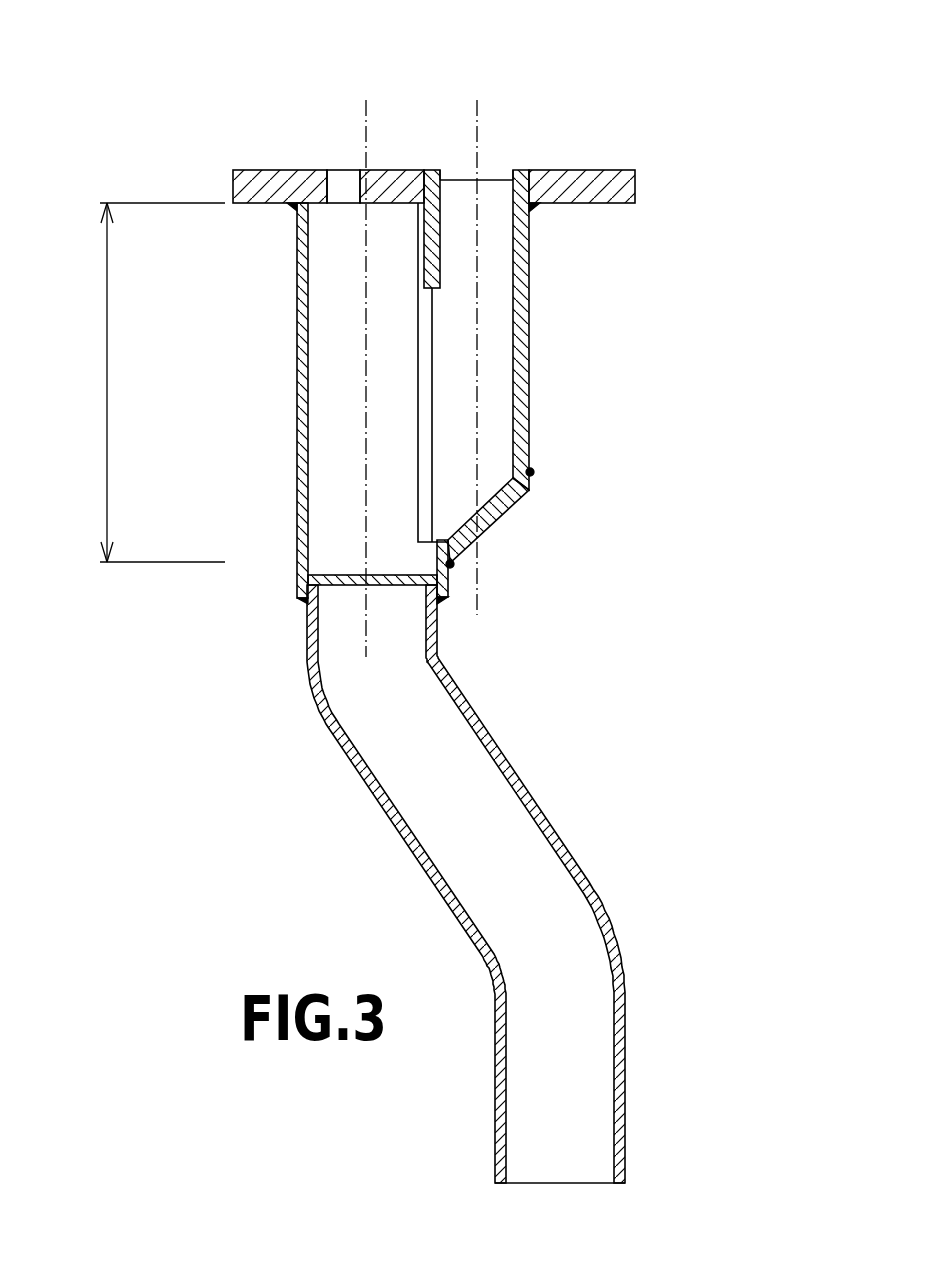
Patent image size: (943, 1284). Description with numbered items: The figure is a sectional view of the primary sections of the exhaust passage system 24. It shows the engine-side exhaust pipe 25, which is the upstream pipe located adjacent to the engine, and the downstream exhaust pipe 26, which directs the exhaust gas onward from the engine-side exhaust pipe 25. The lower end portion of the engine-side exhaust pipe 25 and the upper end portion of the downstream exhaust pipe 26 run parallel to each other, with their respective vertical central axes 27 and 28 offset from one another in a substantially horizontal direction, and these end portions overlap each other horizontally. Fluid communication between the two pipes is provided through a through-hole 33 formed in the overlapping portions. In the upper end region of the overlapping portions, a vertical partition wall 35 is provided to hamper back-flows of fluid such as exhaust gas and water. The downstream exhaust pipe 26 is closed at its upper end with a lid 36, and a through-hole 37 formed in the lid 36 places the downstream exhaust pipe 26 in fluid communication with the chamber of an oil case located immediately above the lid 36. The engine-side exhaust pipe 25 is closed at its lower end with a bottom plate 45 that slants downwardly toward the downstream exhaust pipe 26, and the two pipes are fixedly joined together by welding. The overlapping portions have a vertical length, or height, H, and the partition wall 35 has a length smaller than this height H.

The exhaust passage system 24 is at (735, 153).
The engine-side exhaust pipe 25 is at (513, 397).
The downstream exhaust pipe 26 is at (308, 456).
The vertical central axis of the engine-side exhaust pipe 27 is at (477, 117).
The vertical central axis of the downstream exhaust pipe 28 is at (366, 117).
The through-hole 33 is at (432, 323).
The vertical partition wall 35 is at (440, 245).
The lid 36 is at (275, 169).
The through-hole 37 is at (345, 169).
The bottom plate 45 is at (497, 528).
The vertical length of the overlapping portions H is at (150, 382).